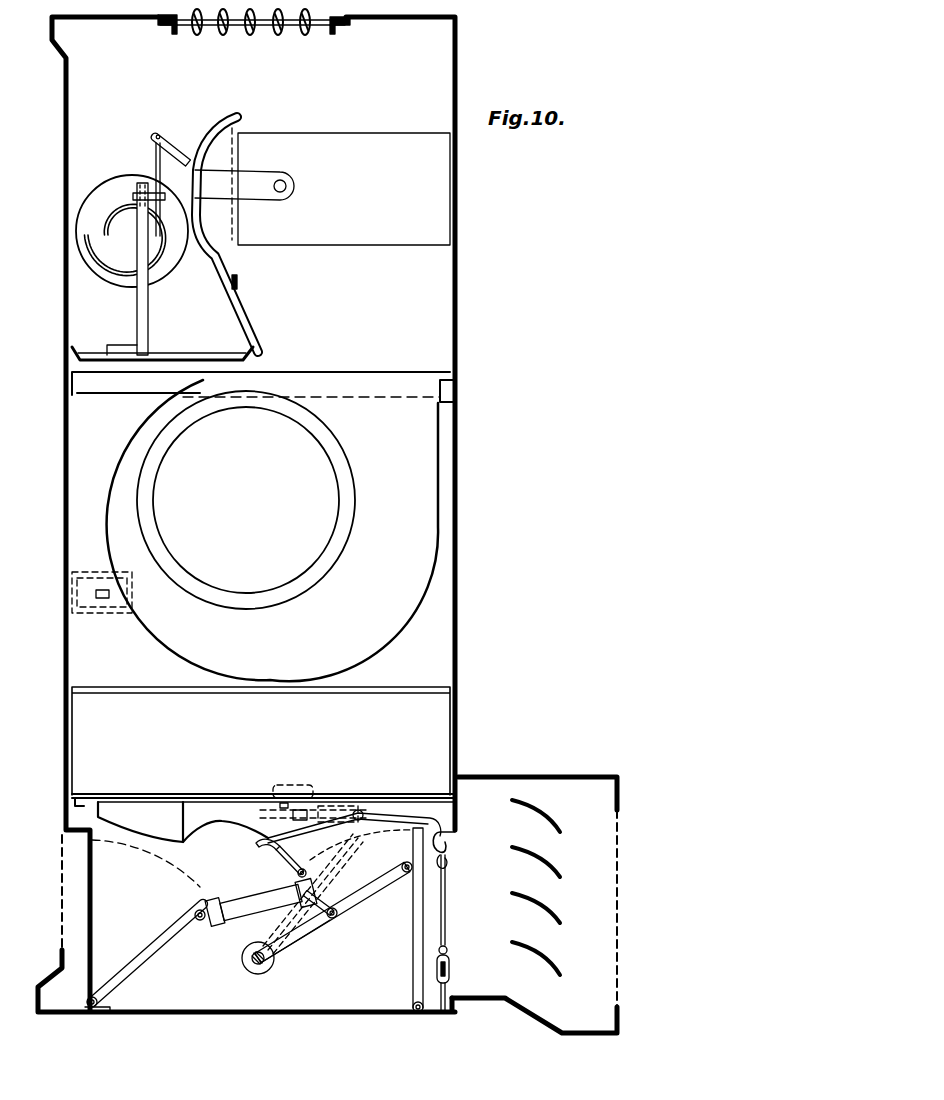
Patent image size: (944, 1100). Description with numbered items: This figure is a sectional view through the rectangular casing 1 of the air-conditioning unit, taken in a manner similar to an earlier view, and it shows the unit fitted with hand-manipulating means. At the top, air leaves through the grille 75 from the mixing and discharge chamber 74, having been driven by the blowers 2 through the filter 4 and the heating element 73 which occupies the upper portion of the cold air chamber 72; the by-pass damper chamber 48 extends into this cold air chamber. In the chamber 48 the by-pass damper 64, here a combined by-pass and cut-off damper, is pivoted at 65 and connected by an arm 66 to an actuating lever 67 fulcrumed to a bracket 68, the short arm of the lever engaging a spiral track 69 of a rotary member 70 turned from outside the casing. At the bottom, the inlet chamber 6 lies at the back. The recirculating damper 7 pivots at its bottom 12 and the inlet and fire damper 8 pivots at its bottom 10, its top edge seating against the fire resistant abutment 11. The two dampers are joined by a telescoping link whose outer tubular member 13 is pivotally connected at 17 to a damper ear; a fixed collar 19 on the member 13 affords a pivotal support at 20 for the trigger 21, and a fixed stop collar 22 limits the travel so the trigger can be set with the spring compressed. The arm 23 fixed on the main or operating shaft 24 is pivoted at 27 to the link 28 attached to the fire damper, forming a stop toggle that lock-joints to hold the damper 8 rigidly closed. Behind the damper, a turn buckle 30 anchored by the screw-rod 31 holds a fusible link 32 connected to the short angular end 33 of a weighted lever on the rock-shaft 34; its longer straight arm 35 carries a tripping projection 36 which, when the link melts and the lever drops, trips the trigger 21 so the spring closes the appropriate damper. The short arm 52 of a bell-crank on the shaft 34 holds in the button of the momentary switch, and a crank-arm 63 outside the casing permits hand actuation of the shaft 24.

The casing 1 is at (458, 470).
The blowers 2 is at (383, 628).
The filter 4 is at (72, 715).
The inlet chamber 6 is at (583, 786).
The recirculating damper 7 is at (147, 948).
The inlet and fire damper 8 is at (414, 958).
The pivot of damper 8 10 is at (418, 1013).
The fire resistant abutment 11 is at (446, 866).
The pivot of damper 7 12 is at (91, 1012).
The outer tubular member 13 is at (253, 912).
The pivotal connection 17 is at (197, 922).
The fixed collar 19 is at (316, 906).
The pivotal support 20 is at (303, 869).
The trigger 21 is at (270, 852).
The fixed stop collar 22 is at (215, 929).
The arm 23 is at (294, 950).
The main or operating shaft 24 is at (259, 975).
The pivot 27 is at (336, 920).
The link 28 is at (362, 896).
The turn buckle 30 is at (450, 963).
The screw-rod 31 is at (447, 998).
The fusible link 32 is at (446, 898).
The short angular end 33 is at (452, 836).
The rock-shaft 34 is at (360, 808).
The longer straight arm 35 is at (148, 808).
The tripping projection 36 is at (264, 838).
The by-pass damper chamber 48 is at (90, 300).
The short arm 52 is at (331, 805).
The crank-arm 63 is at (356, 849).
The by-pass damper 64 is at (260, 297).
The pivot 65 is at (288, 186).
The arm 66 is at (173, 142).
The actuating lever 67 is at (154, 152).
The bracket 68 is at (149, 324).
The spiral track 69 is at (98, 250).
The rotary member 70 is at (172, 268).
The cold air chamber 72 is at (400, 307).
The heating element 73 is at (341, 186).
The mixing and discharge chamber 74 is at (416, 88).
The grille 75 is at (281, 40).